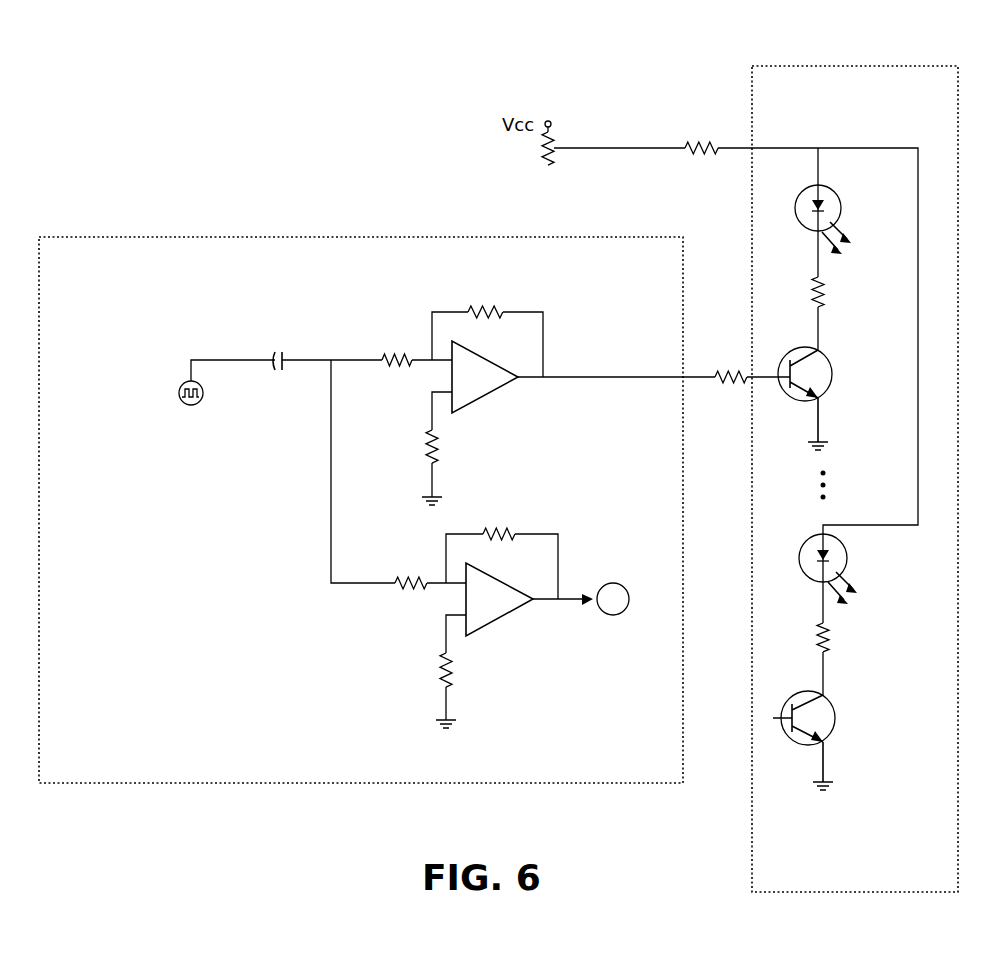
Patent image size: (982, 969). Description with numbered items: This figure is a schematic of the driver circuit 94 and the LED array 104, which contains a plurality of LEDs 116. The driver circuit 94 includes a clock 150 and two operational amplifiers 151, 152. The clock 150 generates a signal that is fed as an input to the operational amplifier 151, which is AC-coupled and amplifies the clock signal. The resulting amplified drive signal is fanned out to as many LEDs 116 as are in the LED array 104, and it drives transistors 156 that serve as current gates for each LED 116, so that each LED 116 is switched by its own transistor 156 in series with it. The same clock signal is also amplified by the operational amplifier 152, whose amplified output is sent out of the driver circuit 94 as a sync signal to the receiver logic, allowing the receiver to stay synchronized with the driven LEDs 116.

The driver circuit 94 is at (93, 244).
The LED array 104 is at (864, 68).
The LED 116 is at (821, 194).
The clock 150 is at (184, 372).
The operational amplifier 151 is at (496, 379).
The operational amplifier 152 is at (511, 601).
The transistor 156 is at (823, 367).